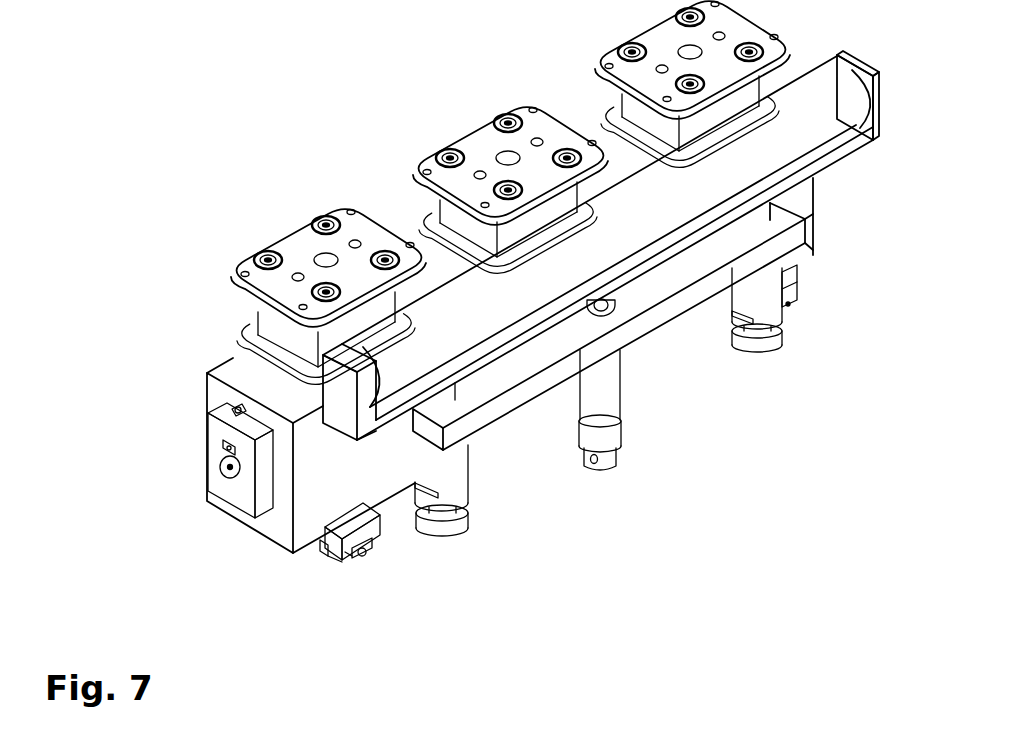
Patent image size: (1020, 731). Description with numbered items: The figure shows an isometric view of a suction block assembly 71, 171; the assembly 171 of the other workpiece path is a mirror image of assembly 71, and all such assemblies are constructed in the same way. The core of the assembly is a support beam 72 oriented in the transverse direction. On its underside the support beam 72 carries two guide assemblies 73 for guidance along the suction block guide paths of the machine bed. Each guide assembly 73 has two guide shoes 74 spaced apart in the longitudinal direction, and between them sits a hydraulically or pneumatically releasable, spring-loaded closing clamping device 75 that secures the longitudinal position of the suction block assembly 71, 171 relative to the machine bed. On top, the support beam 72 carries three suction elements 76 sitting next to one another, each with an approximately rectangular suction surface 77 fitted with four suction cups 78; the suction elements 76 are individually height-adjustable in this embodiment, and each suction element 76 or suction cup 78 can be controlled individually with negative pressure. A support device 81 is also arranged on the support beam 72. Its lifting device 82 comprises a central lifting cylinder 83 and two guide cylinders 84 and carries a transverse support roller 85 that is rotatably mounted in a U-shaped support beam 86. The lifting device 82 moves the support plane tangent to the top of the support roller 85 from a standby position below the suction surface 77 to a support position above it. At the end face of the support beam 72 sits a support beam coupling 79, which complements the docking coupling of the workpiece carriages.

The suction block assembly 71 is at (487, 310).
The suction block assembly 171 is at (356, 178).
The support beam 72 is at (275, 528).
The guide assembly 73 is at (325, 569).
The guide shoe 74 is at (355, 560).
The clamping device 75 is at (317, 545).
The suction element 76 is at (268, 325).
The suction surface 77 is at (300, 240).
The suction cup 78 is at (508, 123).
The support beam coupling 79 is at (223, 465).
The support device 81 is at (475, 528).
The lifting device 82 is at (572, 465).
The lifting cylinder 83 is at (595, 413).
The guide cylinder 84 is at (750, 297).
The support roller 85 is at (437, 317).
The U-shaped support beam 86 is at (512, 347).